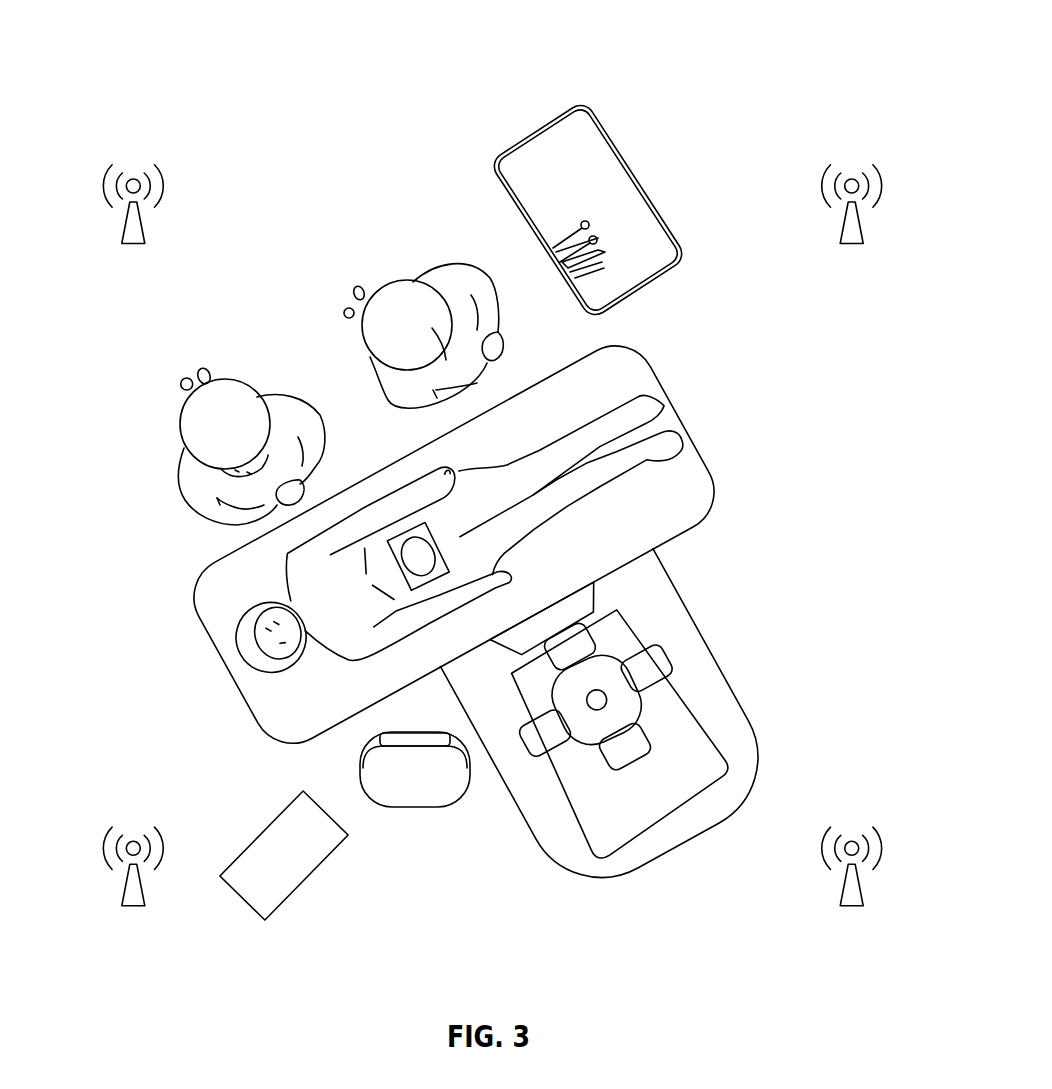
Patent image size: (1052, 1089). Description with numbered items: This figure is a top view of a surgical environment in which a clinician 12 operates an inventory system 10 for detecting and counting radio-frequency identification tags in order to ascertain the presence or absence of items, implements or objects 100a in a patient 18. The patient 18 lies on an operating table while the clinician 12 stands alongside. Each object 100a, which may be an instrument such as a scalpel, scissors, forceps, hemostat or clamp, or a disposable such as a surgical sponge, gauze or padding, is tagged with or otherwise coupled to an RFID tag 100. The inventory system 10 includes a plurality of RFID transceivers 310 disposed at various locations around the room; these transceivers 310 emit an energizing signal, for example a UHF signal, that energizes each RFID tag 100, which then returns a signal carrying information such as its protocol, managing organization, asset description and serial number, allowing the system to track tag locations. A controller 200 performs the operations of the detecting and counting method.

The inventory system 10 is at (116, 44).
The clinician 12 is at (150, 416).
The patient 18 is at (238, 660).
The RFID tag 100 is at (336, 456).
The object 100a is at (404, 530).
The controller 200 is at (255, 847).
The RFID transceiver 310 is at (123, 228).